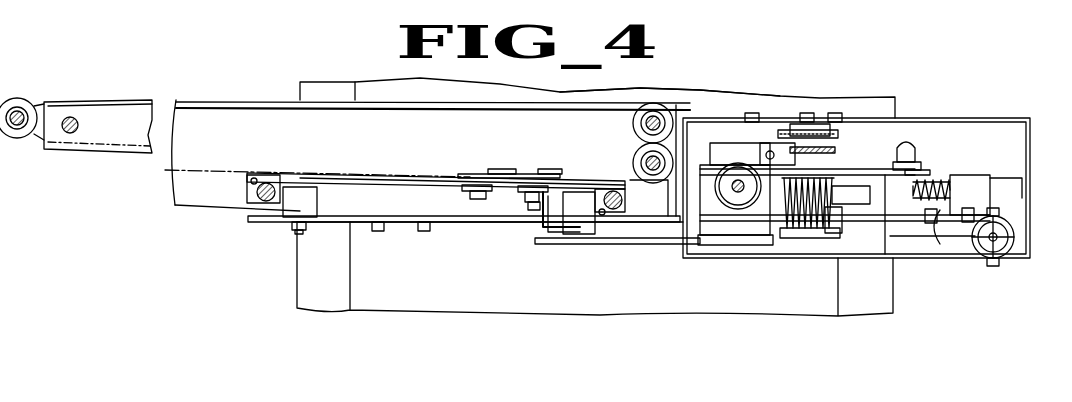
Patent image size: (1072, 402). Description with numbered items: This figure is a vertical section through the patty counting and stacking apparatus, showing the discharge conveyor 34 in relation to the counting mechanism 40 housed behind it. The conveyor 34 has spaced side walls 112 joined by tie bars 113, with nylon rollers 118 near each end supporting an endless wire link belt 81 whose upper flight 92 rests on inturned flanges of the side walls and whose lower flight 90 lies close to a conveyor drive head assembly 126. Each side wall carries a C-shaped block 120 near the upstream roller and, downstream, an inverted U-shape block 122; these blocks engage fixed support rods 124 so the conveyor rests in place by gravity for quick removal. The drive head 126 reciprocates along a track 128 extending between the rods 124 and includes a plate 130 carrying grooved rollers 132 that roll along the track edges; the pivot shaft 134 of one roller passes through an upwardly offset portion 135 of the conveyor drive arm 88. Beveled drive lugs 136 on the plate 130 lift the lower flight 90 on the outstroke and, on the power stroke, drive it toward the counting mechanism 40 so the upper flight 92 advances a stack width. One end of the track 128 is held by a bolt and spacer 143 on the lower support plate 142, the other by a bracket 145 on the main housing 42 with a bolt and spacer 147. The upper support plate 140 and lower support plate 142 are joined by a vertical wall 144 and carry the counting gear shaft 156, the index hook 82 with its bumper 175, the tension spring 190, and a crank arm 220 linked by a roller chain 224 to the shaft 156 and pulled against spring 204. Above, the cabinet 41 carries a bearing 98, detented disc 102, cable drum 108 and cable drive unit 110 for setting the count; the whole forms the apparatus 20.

The power door operator assembly 20 is at (336, 56).
The discharge conveyor 34 is at (160, 183).
The counting mechanism 40 is at (938, 158).
The cabinet 41 is at (1012, 123).
The main housing 42 is at (706, 92).
The endless wire link belt 81 is at (60, 100).
The index hook 82 is at (895, 160).
The conveyor drive arm 88 is at (672, 244).
The lower flight 90 is at (308, 173).
The upper flight 92 is at (254, 100).
The bearing 98 is at (800, 125).
The disc 102 is at (852, 125).
The cable drum 108 is at (838, 150).
The cable drive unit 110 is at (705, 180).
The side walls 112 is at (190, 116).
The tie bars 113 is at (70, 134).
The nylon rollers 118 is at (17, 98).
The C-shaped block 120 is at (612, 190).
The inverted U-shape blocks 122 is at (270, 173).
The support rods 124 is at (247, 192).
The conveyor drive head assembly 126 is at (456, 174).
The track 128 is at (336, 186).
The plate 130 is at (492, 174).
The grooved rollers 132 is at (462, 192).
The pivot shaft 134 is at (528, 214).
The upwardly offset portion 135 is at (540, 240).
The drive lugs 136 is at (560, 174).
The upper support plate 140 is at (1000, 172).
The lower support plate 142 is at (766, 248).
The bolt and spacer 143 is at (585, 234).
The vertical wall 144 is at (728, 245).
The bracket 145 is at (255, 220).
The bolt and spacer 147 is at (295, 210).
The counting gear shaft 156 is at (797, 222).
The bumper 175 is at (922, 170).
The tension spring 190 is at (946, 205).
The spring 204 is at (975, 260).
The crank arm 220 is at (938, 240).
The roller chain 224 is at (912, 220).